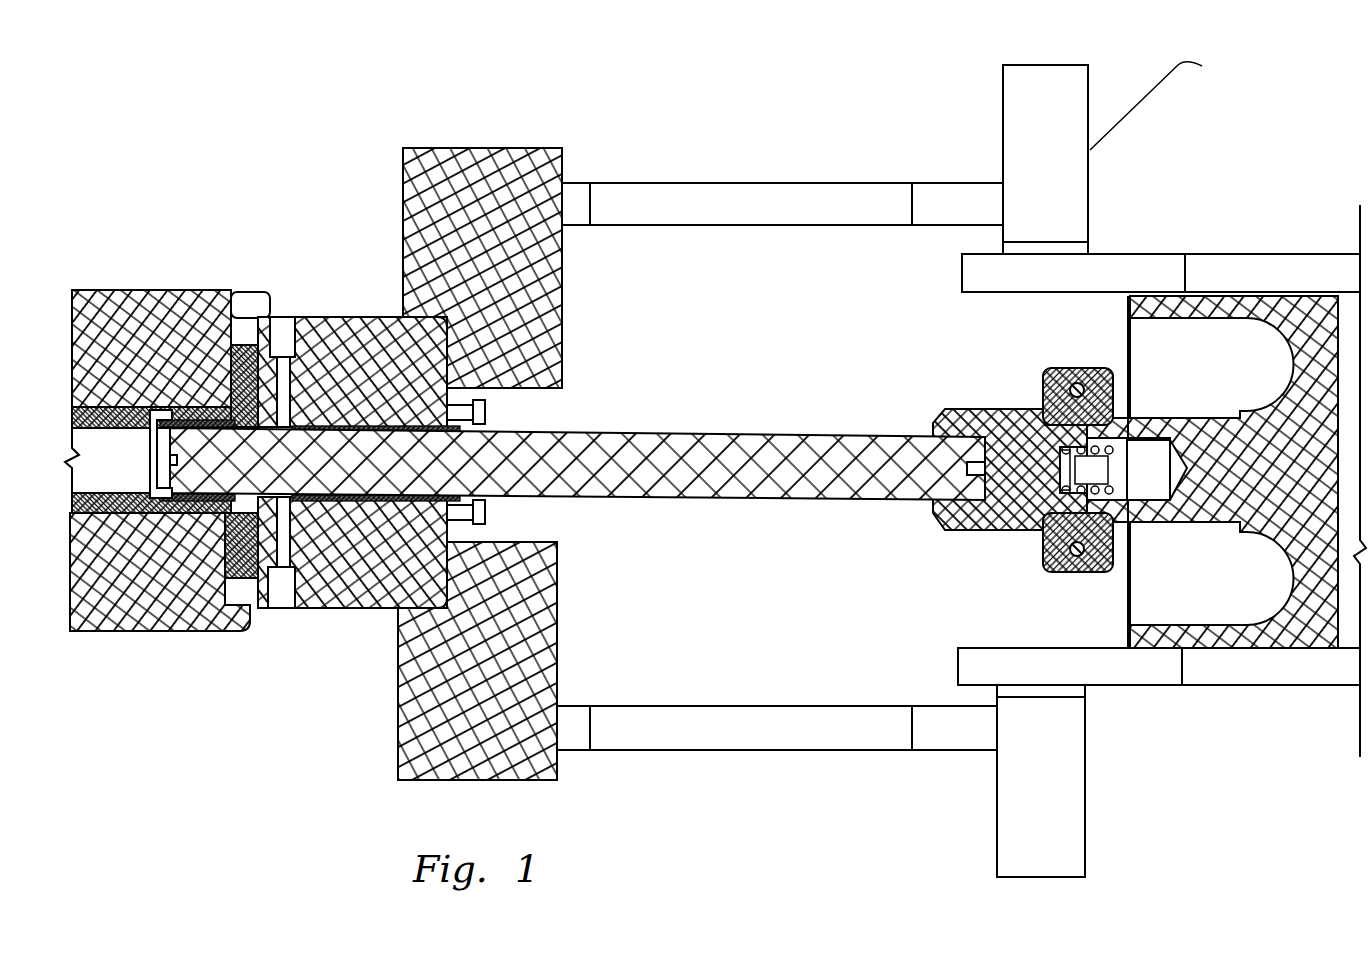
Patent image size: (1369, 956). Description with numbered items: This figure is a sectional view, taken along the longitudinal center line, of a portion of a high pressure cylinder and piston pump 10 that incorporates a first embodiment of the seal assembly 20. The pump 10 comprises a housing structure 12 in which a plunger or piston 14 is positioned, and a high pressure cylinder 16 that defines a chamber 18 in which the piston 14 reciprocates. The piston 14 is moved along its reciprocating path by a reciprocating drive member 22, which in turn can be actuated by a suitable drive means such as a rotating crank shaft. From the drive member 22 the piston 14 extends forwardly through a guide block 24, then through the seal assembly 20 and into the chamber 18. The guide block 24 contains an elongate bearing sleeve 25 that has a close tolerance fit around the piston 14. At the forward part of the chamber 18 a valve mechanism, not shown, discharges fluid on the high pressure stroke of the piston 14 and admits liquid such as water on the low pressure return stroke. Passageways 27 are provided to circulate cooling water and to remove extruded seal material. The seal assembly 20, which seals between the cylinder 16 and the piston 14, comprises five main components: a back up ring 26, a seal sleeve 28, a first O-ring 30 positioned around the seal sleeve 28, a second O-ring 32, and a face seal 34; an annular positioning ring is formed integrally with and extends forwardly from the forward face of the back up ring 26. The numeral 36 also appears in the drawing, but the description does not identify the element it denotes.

The pump 10 is at (698, 150).
The housing structure 12 is at (482, 150).
The piston 14 is at (538, 452).
The high pressure cylinder 16 is at (90, 290).
The chamber 18 is at (84, 478).
The seal assembly 20 is at (271, 305).
The reciprocating drive member 22 is at (1000, 405).
The guide block 24 is at (353, 317).
The bearing sleeve 25 is at (347, 500).
The back up ring 26 is at (236, 403).
The passageways 27 is at (284, 612).
The seal sleeve 28 is at (173, 405).
The first O-ring 30 is at (195, 520).
The second O-ring 32 is at (232, 585).
The face seal 34 is at (192, 407).
The bushing 36 is at (177, 410).